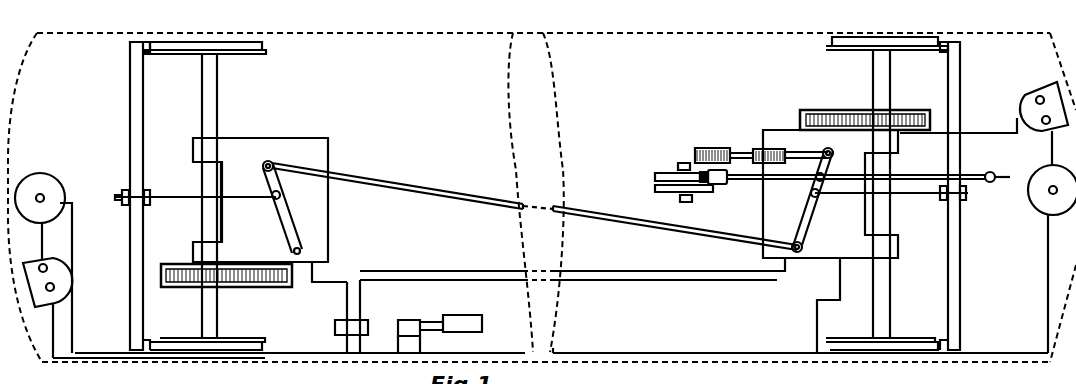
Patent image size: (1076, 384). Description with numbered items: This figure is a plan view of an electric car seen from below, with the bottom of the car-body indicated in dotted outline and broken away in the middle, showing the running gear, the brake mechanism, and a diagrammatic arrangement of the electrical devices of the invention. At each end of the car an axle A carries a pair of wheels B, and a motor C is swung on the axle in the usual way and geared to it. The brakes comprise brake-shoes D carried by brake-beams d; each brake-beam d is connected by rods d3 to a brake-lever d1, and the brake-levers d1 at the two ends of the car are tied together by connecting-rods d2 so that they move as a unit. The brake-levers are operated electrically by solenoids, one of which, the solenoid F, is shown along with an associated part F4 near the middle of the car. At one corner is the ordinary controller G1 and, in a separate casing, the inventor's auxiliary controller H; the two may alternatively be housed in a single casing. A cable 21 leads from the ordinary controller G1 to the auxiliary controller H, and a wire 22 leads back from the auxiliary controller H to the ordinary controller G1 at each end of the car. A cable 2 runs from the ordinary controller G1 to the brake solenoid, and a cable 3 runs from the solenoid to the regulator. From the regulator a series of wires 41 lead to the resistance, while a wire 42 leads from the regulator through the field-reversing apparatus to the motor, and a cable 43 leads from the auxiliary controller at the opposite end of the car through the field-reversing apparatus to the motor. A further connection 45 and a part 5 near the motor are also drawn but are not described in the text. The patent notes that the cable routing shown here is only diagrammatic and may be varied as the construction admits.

The brake-shoes D is at (143, 45).
The wheels B is at (250, 50).
The axles A is at (213, 112).
The motors C is at (545, 198).
The brake-levers d1 is at (296, 232).
The connecting-rods d2 is at (438, 186).
The rods connecting the brake-levers to the brake-beam d3 is at (172, 197).
The brake-beams d is at (134, 228).
The auxiliary controller H is at (66, 194).
The cable 21 is at (49, 233).
The ordinary controller G1 is at (60, 283).
The cable 43 is at (74, 218).
The cable 2 is at (990, 137).
The wire 22 is at (490, 353).
The connecting bar 45 is at (322, 283).
The wire 42 is at (374, 353).
The series of wires or cables 41 is at (432, 322).
The cable 3 is at (424, 343).
The bracket 5 is at (797, 140).
The solenoid F is at (713, 148).
The rod F4 is at (777, 165).